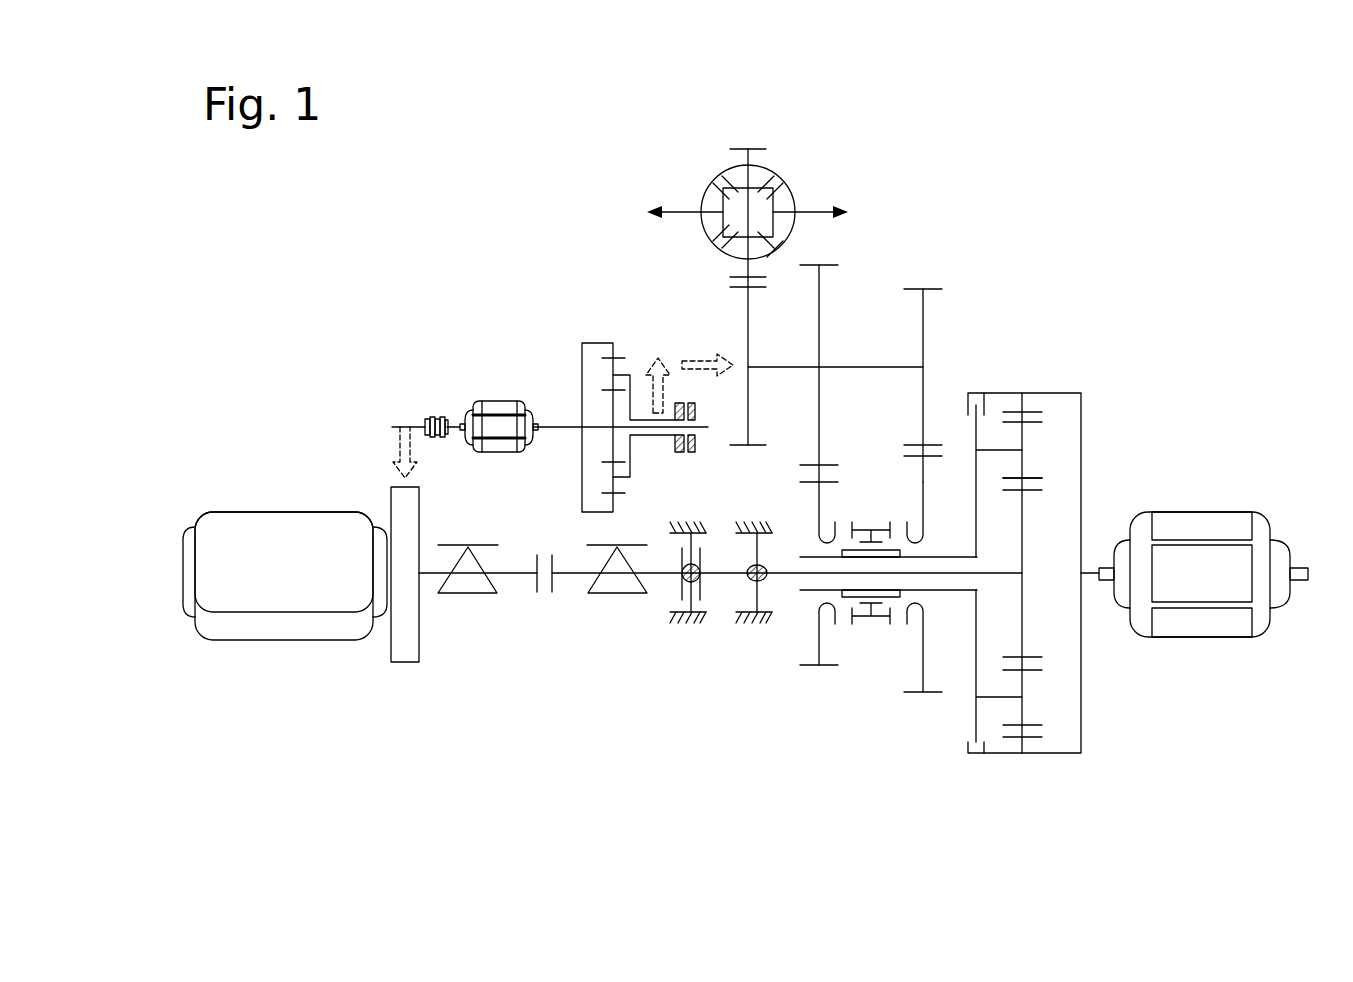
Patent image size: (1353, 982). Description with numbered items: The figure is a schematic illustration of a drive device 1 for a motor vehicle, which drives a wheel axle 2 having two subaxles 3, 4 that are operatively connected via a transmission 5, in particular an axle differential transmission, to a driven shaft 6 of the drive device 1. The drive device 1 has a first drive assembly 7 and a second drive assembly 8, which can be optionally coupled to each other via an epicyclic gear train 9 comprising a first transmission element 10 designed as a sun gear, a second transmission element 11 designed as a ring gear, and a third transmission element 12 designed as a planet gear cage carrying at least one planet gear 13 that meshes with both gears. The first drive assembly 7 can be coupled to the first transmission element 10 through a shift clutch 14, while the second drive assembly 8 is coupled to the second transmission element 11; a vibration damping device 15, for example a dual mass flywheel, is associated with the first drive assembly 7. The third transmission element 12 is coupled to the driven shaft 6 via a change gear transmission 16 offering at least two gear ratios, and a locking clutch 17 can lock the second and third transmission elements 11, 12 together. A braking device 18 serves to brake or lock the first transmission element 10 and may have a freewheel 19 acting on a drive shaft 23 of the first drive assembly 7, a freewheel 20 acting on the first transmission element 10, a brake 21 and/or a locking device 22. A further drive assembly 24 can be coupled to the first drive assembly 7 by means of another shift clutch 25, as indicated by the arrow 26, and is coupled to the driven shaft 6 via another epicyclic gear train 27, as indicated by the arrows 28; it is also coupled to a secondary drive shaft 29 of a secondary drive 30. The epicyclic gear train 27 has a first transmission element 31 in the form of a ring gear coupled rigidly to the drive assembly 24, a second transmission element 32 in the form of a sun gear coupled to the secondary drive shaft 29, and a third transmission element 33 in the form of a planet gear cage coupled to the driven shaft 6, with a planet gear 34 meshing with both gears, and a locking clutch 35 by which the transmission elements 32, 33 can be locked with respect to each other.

The drive device 1 is at (1076, 236).
The wheel axle 2 is at (795, 146).
The subaxle 3 is at (685, 210).
The subaxle 4 is at (812, 210).
The transmission 5 is at (700, 146).
The driven shaft 6 is at (870, 367).
The first drive assembly 7 is at (230, 535).
The second drive assembly 8 is at (1193, 523).
The epicyclic gear train 9 is at (1094, 374).
The first transmission element 10 is at (1030, 658).
The second transmission element 11 is at (1030, 412).
The third transmission element 12 is at (995, 413).
The planet gear 13 is at (1028, 426).
The shift clutch 14 is at (541, 606).
The vibration damping device 15 is at (403, 640).
The change gear transmission 16 is at (861, 683).
The locking clutch 17 is at (975, 372).
The braking device 18 is at (578, 652).
The freewheel 19 is at (468, 578).
The freewheel 20 is at (617, 578).
The brake 21 is at (714, 603).
The locking device 22 is at (776, 603).
The drive shaft 23 is at (513, 577).
The drive assembly 24 is at (493, 425).
The shift clutch 25 is at (428, 392).
The arrow 26 is at (395, 442).
The epicyclic gear train 27 is at (583, 322).
The arrows 28 is at (656, 362).
The secondary drive shaft 29 is at (700, 437).
The secondary drive 30 is at (703, 385).
The first transmission element 31 is at (608, 357).
The second transmission element 32 is at (603, 458).
The third transmission element 33 is at (606, 464).
The planet gear 34 is at (603, 493).
The locking clutch 35 is at (712, 410).